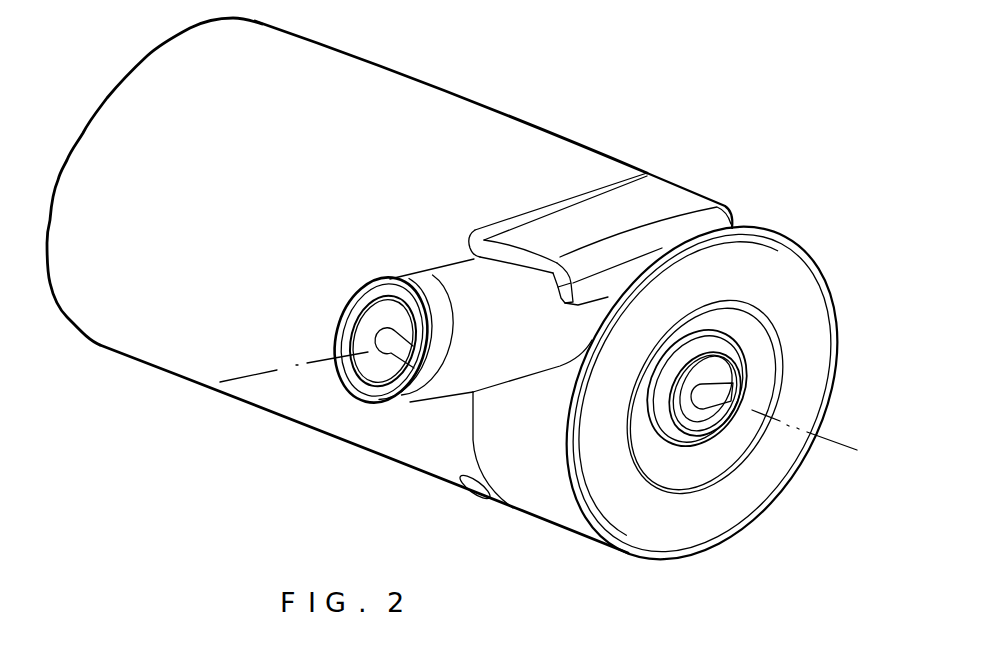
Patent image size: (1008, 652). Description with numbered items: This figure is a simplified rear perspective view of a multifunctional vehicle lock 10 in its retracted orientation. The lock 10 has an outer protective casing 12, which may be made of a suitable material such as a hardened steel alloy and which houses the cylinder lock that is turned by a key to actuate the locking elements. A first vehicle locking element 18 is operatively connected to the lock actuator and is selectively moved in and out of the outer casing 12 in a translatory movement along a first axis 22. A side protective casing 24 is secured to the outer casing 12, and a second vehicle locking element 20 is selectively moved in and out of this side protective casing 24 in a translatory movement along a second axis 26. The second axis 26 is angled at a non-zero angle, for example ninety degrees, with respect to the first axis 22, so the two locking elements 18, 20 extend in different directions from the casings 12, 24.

The lock 10 is at (584, 108).
The outer protective casing 12 is at (417, 102).
The first vehicle locking element 18 is at (715, 368).
The second vehicle locking element 20 is at (372, 320).
The first axis 22 is at (826, 437).
The side protective casing 24 is at (442, 278).
The second axis 26 is at (256, 374).